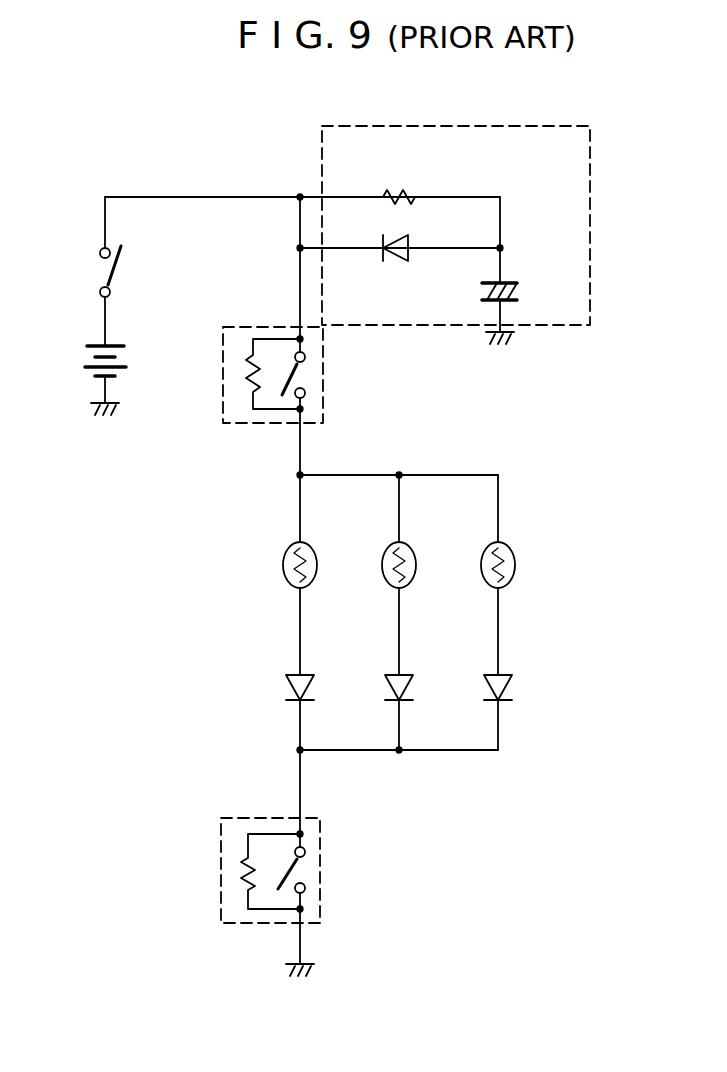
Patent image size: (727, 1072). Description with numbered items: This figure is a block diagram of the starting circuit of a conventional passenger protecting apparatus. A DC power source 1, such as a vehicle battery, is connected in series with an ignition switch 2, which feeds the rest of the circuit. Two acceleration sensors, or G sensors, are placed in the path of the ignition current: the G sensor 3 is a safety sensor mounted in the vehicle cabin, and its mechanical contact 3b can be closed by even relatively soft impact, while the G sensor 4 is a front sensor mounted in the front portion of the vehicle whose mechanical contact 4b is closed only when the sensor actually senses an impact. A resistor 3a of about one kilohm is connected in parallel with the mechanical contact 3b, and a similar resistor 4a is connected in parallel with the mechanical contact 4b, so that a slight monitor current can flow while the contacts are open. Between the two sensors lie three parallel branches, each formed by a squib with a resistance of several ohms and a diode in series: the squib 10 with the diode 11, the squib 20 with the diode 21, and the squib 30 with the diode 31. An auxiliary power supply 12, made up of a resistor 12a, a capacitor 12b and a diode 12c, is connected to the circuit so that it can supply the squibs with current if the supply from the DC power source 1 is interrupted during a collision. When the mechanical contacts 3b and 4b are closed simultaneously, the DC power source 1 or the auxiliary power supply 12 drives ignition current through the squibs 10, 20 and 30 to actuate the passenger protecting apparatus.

The DC power source 1 is at (86, 357).
The ignition switch 2 is at (100, 268).
The G sensor 3 is at (284, 375).
The resistor 3a is at (243, 381).
The mechanical contact 3b is at (323, 418).
The G sensor 4 is at (276, 872).
The resistor 4a is at (240, 885).
The mechanical contact 4b is at (306, 868).
The squib 10 is at (282, 553).
The diode 11 is at (286, 688).
The auxiliary power supply 12 is at (501, 235).
The resistor 12a is at (397, 193).
The capacitor 12b is at (518, 292).
The diode 12c is at (396, 262).
The squib 20 is at (382, 554).
The diode 21 is at (386, 688).
The squib 30 is at (481, 556).
The diode 31 is at (484, 688).